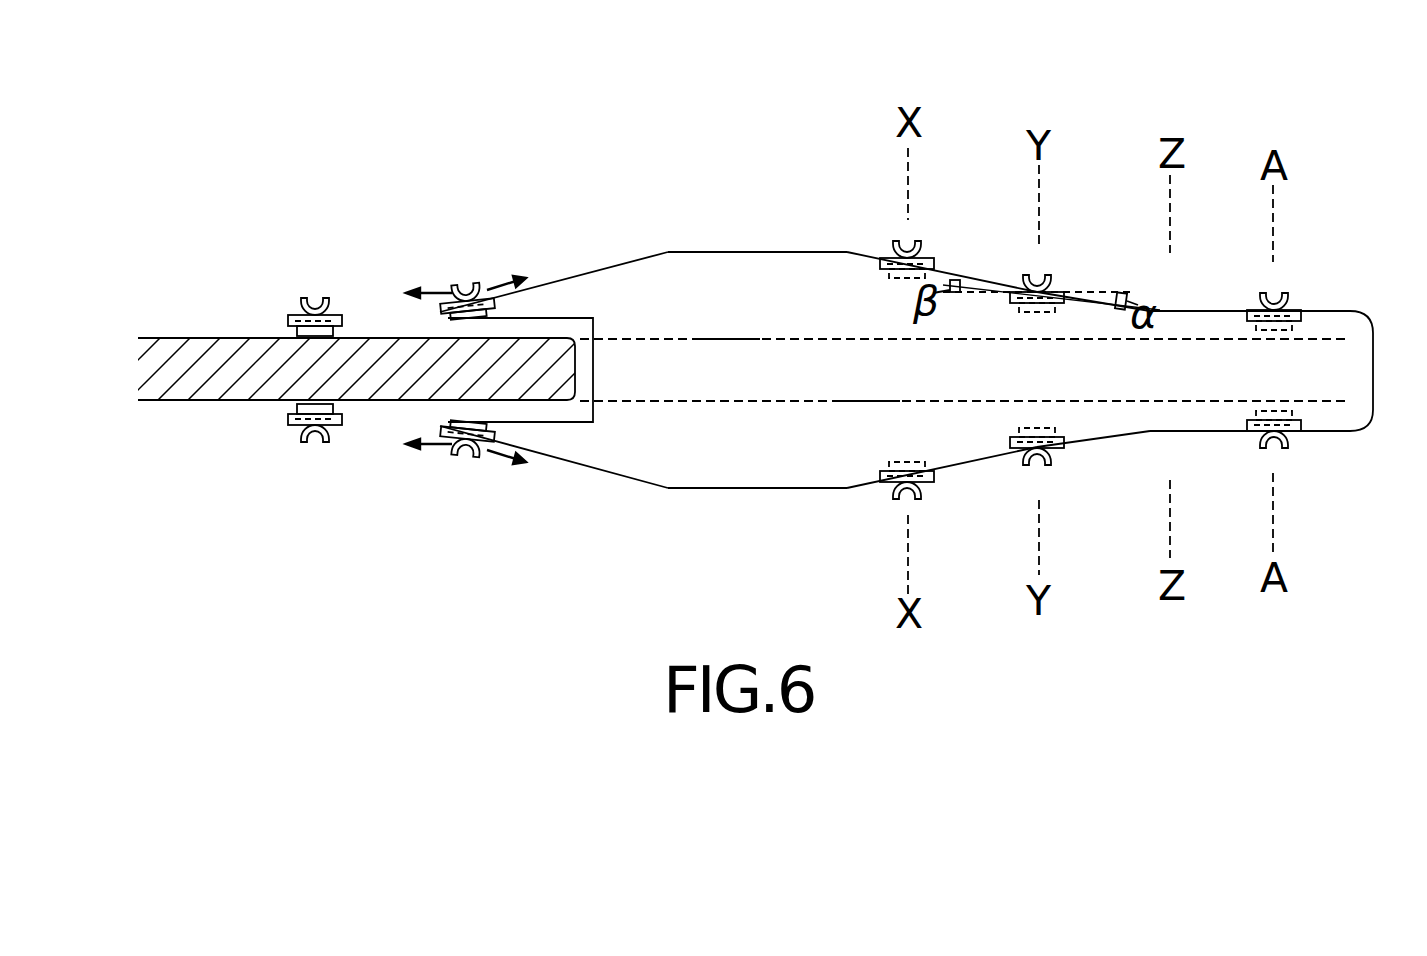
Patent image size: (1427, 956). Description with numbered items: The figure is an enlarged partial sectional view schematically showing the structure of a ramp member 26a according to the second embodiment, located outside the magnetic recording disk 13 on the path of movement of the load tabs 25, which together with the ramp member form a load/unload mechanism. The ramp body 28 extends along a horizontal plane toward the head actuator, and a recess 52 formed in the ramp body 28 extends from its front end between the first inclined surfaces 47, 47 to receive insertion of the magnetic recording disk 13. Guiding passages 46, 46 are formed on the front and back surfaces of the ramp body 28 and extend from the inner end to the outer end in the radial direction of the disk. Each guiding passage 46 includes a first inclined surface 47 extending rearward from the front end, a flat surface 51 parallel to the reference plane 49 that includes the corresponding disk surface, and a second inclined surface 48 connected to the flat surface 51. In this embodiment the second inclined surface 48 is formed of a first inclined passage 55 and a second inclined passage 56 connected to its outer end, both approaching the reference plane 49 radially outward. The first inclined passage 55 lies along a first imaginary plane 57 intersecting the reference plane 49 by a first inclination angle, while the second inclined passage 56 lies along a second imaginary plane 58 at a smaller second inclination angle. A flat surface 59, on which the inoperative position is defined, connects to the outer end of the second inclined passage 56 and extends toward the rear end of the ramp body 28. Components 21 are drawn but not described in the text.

The magnetic recording disk 13 is at (190, 338).
The electronic component 21 is at (345, 330).
The load tab 25 is at (303, 300).
The ramp member 26a is at (525, 128).
The ramp body 28 is at (1352, 311).
The guiding passage 46 is at (753, 250).
The first inclined surface 47 is at (598, 270).
The second inclined surface 48 is at (1085, 298).
The reference plane 49 is at (720, 340).
The flat surface 51 is at (810, 252).
The recess 52 is at (598, 348).
The first inclined passage 55 is at (960, 277).
The second inclined passage 56 is at (1162, 311).
The first imaginary plane 57 is at (1100, 302).
The second imaginary plane 58 is at (964, 287).
The flat surface 59 is at (1326, 311).